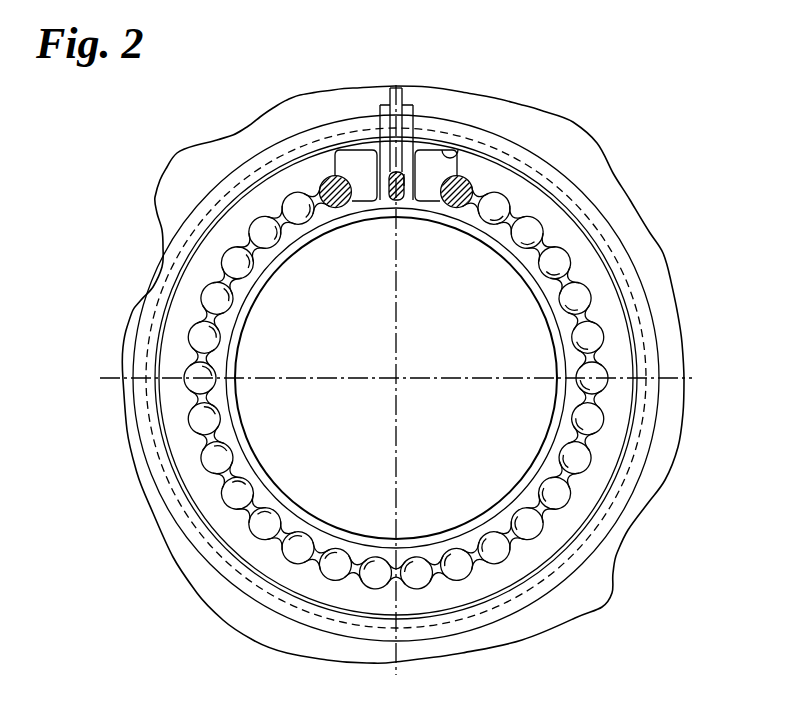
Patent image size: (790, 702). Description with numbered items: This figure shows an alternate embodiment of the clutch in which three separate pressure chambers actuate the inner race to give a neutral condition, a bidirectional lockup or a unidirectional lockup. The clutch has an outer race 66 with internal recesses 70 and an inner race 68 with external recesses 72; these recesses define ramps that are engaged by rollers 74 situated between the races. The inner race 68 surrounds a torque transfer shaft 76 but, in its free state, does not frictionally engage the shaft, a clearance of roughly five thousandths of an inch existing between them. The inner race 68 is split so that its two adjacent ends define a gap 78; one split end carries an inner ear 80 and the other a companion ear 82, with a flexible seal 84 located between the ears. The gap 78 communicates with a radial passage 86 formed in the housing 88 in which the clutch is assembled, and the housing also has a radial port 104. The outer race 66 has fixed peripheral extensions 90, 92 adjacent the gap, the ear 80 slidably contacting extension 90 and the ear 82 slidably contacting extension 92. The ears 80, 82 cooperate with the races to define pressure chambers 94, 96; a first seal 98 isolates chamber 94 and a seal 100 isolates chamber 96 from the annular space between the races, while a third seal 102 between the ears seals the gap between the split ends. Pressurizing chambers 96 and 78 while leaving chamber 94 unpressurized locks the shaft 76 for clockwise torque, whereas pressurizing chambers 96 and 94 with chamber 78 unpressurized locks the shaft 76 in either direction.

The outer race 66 is at (572, 236).
The inner race 68 is at (572, 324).
The internal recesses 70 is at (537, 220).
The external recesses 72 is at (590, 372).
The rollers 74 is at (592, 421).
The torque transfer shaft 76 is at (446, 431).
The gap 78 is at (368, 182).
The inner ear 80 is at (410, 108).
The companion ear 82 is at (372, 147).
The flexible seal 84 is at (406, 170).
The radial passage 86 is at (396, 88).
The housing 88 is at (450, 150).
The peripheral extension 90 is at (466, 138).
The peripheral extension 92 is at (338, 148).
The pressure chamber 94 is at (435, 170).
The pressure chamber 96 is at (355, 162).
The first seal 98 is at (474, 186).
The seal 100 is at (322, 188).
The third seal 102 is at (394, 202).
The radial port 104 is at (383, 108).